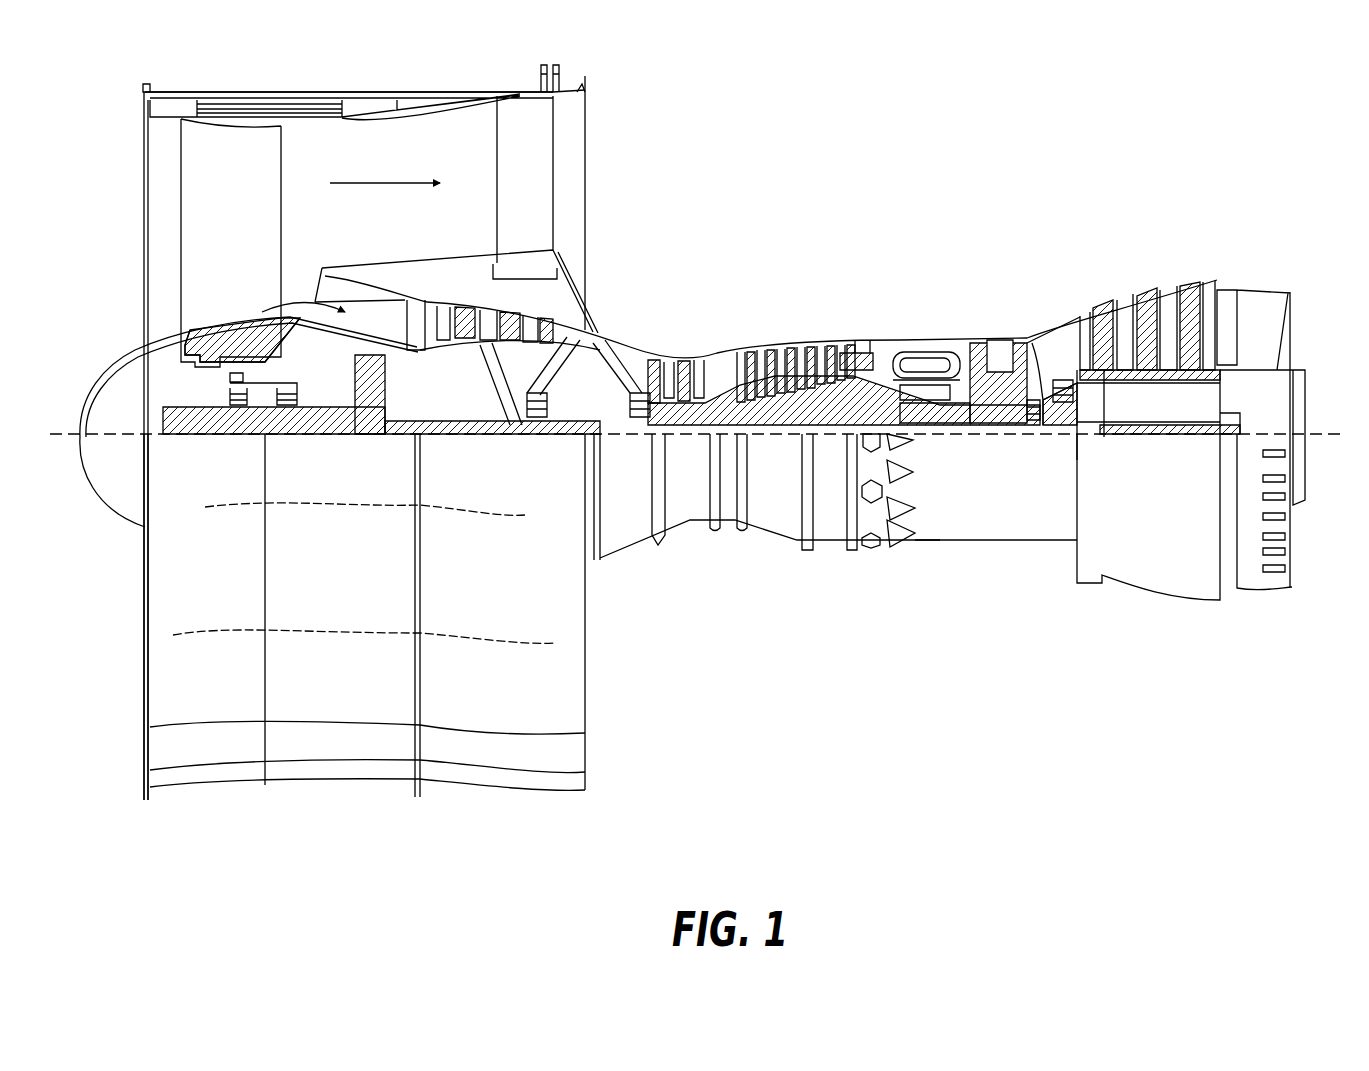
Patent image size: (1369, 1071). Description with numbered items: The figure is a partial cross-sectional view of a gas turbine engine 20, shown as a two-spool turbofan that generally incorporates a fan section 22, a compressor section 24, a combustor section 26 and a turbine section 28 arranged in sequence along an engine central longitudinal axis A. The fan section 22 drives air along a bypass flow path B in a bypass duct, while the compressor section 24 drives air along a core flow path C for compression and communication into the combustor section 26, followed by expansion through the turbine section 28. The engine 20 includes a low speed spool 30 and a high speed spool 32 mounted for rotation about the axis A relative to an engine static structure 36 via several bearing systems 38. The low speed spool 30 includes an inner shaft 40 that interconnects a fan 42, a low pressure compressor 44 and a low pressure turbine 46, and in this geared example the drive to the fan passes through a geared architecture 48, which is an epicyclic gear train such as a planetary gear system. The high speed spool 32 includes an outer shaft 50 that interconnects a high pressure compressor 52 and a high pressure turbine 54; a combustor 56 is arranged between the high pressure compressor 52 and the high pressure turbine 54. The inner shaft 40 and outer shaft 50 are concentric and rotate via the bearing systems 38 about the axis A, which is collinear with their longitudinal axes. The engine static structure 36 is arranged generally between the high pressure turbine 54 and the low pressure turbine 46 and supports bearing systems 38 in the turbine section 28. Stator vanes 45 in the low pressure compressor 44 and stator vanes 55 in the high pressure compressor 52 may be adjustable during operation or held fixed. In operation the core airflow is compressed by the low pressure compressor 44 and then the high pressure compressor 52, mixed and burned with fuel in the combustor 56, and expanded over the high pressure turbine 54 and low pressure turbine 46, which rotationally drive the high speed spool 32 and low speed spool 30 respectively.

The gas turbine engine 20 is at (1172, 102).
The fan section 22 is at (250, 90).
The compressor section 24 is at (751, 253).
The combustor section 26 is at (937, 236).
The turbine section 28 is at (1080, 230).
The low speed spool 30 is at (793, 442).
The high speed spool 32 is at (838, 400).
The engine static structure 36 is at (832, 549).
The bearing systems 38 is at (238, 418).
The inner shaft 40 is at (605, 437).
The fan 42 is at (243, 230).
The low pressure compressor 44 is at (520, 300).
The stator vanes 45 is at (470, 305).
The low pressure turbine 46 is at (1150, 303).
The geared architecture 48 is at (372, 432).
The outer shaft 50 is at (935, 421).
The high pressure compressor 52 is at (743, 403).
The high pressure turbine 54 is at (1000, 338).
The stator vanes 55 is at (668, 358).
The combustor 56 is at (923, 360).
The engine central longitudinal axis A is at (1326, 434).
The bypass flow path B is at (390, 180).
The core flow path C is at (272, 303).